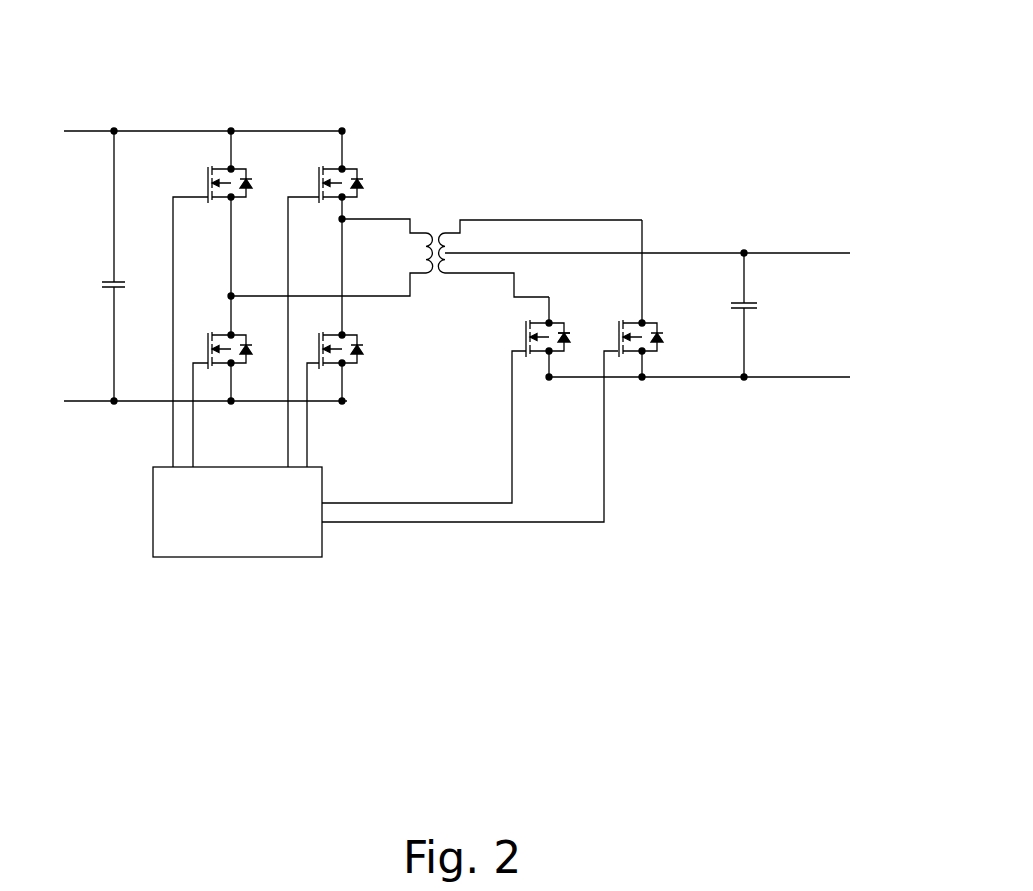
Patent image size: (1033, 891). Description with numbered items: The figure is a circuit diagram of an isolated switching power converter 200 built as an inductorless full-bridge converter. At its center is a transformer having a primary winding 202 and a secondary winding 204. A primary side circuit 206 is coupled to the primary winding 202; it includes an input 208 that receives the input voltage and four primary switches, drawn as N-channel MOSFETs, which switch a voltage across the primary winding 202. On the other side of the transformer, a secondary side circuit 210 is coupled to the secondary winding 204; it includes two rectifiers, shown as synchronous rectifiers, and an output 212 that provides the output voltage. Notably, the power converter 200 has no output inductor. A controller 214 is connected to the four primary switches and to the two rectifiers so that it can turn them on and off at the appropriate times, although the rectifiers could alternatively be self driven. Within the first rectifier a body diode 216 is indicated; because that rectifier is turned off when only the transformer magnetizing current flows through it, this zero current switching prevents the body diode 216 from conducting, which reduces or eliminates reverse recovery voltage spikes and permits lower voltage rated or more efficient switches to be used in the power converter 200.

The power converter 200 is at (163, 53).
The primary winding 202 is at (405, 210).
The secondary winding 204 is at (462, 212).
The primary side circuit 206 is at (281, 117).
The input 208 is at (82, 172).
The secondary side circuit 210 is at (681, 230).
The output 212 is at (857, 298).
The controller 214 is at (275, 557).
The body diode 216 is at (568, 337).